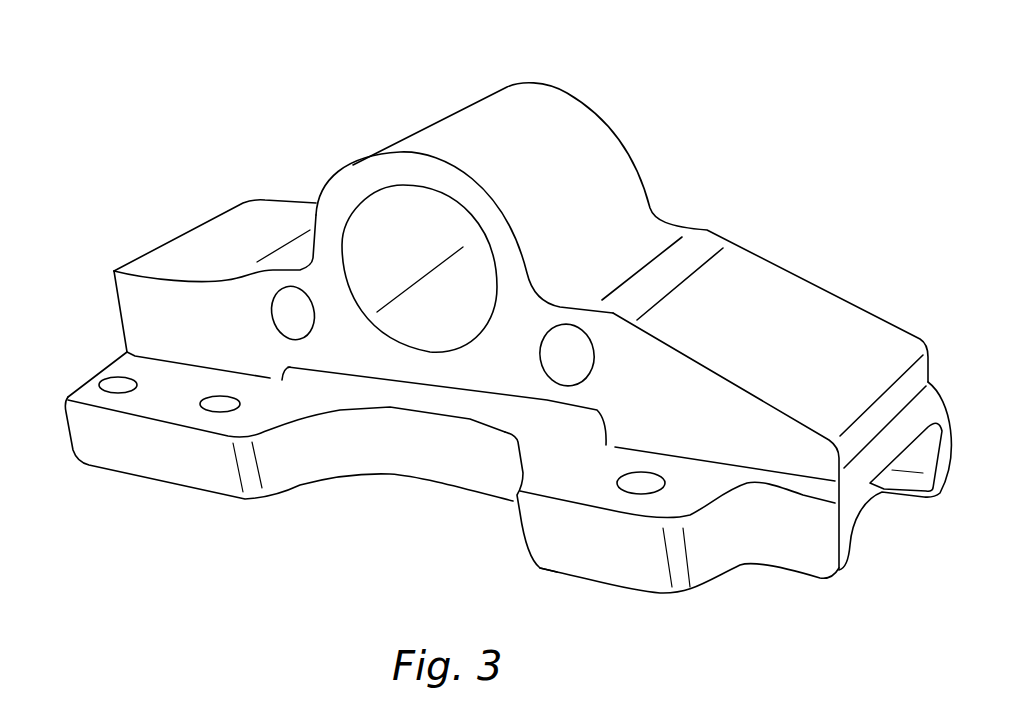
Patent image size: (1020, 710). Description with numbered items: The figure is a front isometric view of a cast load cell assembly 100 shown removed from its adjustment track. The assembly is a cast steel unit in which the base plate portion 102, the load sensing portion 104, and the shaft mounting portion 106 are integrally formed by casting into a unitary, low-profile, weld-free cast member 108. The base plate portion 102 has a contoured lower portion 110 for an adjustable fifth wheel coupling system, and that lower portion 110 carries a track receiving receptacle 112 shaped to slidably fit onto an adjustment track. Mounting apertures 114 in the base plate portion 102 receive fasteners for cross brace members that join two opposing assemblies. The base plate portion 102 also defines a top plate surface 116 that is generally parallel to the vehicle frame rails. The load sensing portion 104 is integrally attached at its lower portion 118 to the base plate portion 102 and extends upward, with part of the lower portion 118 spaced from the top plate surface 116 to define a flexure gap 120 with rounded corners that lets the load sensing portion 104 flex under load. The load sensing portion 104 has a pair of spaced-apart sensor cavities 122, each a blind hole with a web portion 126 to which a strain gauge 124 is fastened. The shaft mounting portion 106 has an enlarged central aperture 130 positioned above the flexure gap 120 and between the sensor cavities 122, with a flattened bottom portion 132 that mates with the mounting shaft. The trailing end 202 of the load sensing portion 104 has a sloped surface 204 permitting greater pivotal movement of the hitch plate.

The cast load cell assembly 100 is at (100, 222).
The base plate portion 102 is at (117, 452).
The load sensing portion 104 is at (138, 322).
The shaft mounting portion 106 is at (355, 178).
The cast member 108 is at (225, 243).
The lower portion 110 is at (803, 560).
The track receiving receptacle 112 is at (878, 526).
The mounting apertures 114 is at (227, 411).
The top plate surface 116 is at (180, 405).
The lower portion 118 is at (739, 433).
The flexure gap 120 is at (431, 410).
The sensor cavity 122 is at (303, 328).
The strain gauge 124 is at (627, 257).
The web portion 126 is at (688, 267).
The central aperture 130 is at (402, 322).
The flattened bottom portion 132 is at (467, 336).
The trailing end 202 is at (784, 400).
The sloped surface 204 is at (822, 410).